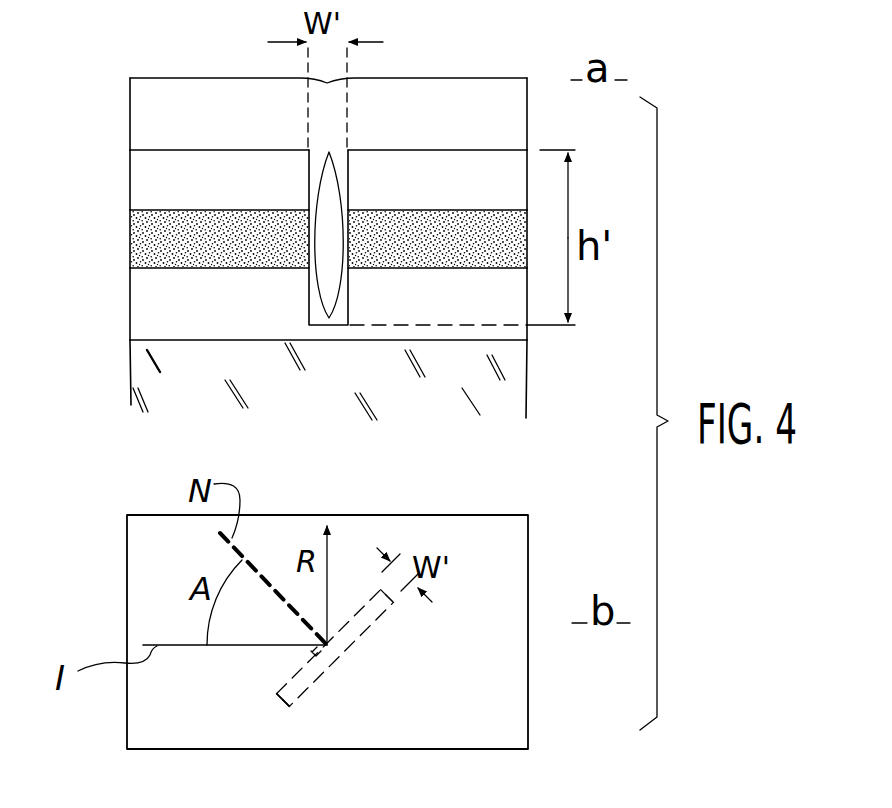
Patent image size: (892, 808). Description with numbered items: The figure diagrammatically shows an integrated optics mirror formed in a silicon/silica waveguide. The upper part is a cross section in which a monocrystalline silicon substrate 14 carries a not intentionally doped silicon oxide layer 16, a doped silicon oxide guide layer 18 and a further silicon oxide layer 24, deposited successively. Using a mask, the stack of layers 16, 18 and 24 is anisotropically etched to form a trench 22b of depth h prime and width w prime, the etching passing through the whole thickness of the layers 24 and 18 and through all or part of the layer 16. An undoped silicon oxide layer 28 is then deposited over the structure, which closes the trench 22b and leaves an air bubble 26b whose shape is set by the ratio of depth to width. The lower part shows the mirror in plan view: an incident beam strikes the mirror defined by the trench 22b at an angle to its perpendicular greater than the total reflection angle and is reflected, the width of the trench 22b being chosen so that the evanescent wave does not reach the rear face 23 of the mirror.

The monocrystalline silicon substrate 14 is at (158, 378).
The silicon oxide layer 16 is at (160, 315).
The silicon oxide guide layer 18 is at (176, 240).
The silicon oxide layer 24 is at (176, 178).
The undoped silicon oxide layer 28 is at (176, 111).
The trench 22b is at (346, 166).
The air bubble 26b is at (348, 326).
The rear face 23 is at (290, 706).